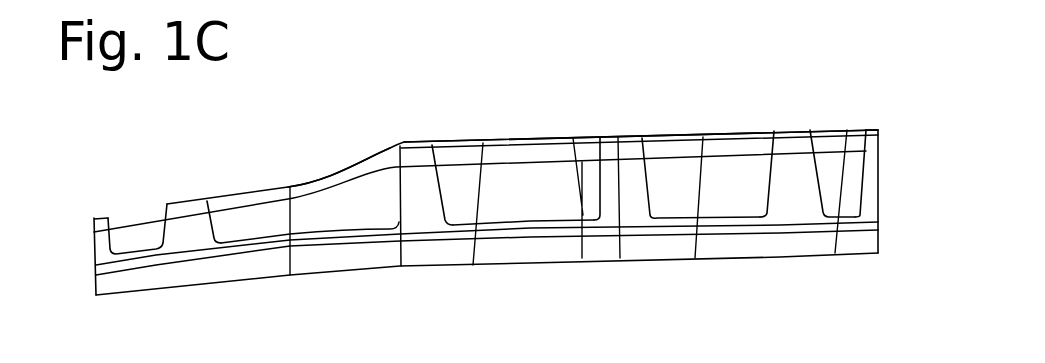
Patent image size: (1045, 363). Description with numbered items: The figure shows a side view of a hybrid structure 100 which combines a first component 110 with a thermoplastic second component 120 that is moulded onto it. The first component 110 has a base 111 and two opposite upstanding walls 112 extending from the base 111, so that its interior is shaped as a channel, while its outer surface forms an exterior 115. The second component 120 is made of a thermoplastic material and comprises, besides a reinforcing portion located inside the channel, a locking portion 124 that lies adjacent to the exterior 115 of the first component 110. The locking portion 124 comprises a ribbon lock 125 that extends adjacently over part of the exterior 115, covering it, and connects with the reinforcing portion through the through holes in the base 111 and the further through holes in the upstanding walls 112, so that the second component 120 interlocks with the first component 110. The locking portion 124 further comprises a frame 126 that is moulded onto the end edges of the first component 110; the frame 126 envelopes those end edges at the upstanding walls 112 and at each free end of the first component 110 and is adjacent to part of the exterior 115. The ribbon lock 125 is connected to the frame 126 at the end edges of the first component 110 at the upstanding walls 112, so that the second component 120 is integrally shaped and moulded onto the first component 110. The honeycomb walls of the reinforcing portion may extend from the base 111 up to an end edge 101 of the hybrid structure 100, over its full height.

The hybrid structure 100 is at (662, 283).
The end edge of the hybrid structure 101 is at (100, 229).
The first component 110 is at (555, 170).
The base 111 is at (344, 168).
The upstanding walls 112 is at (304, 212).
The exterior 115 is at (508, 141).
The second component 120 is at (258, 261).
The locking portion 124 is at (572, 245).
The ribbon lock 125 is at (192, 226).
The frame 126 is at (103, 252).